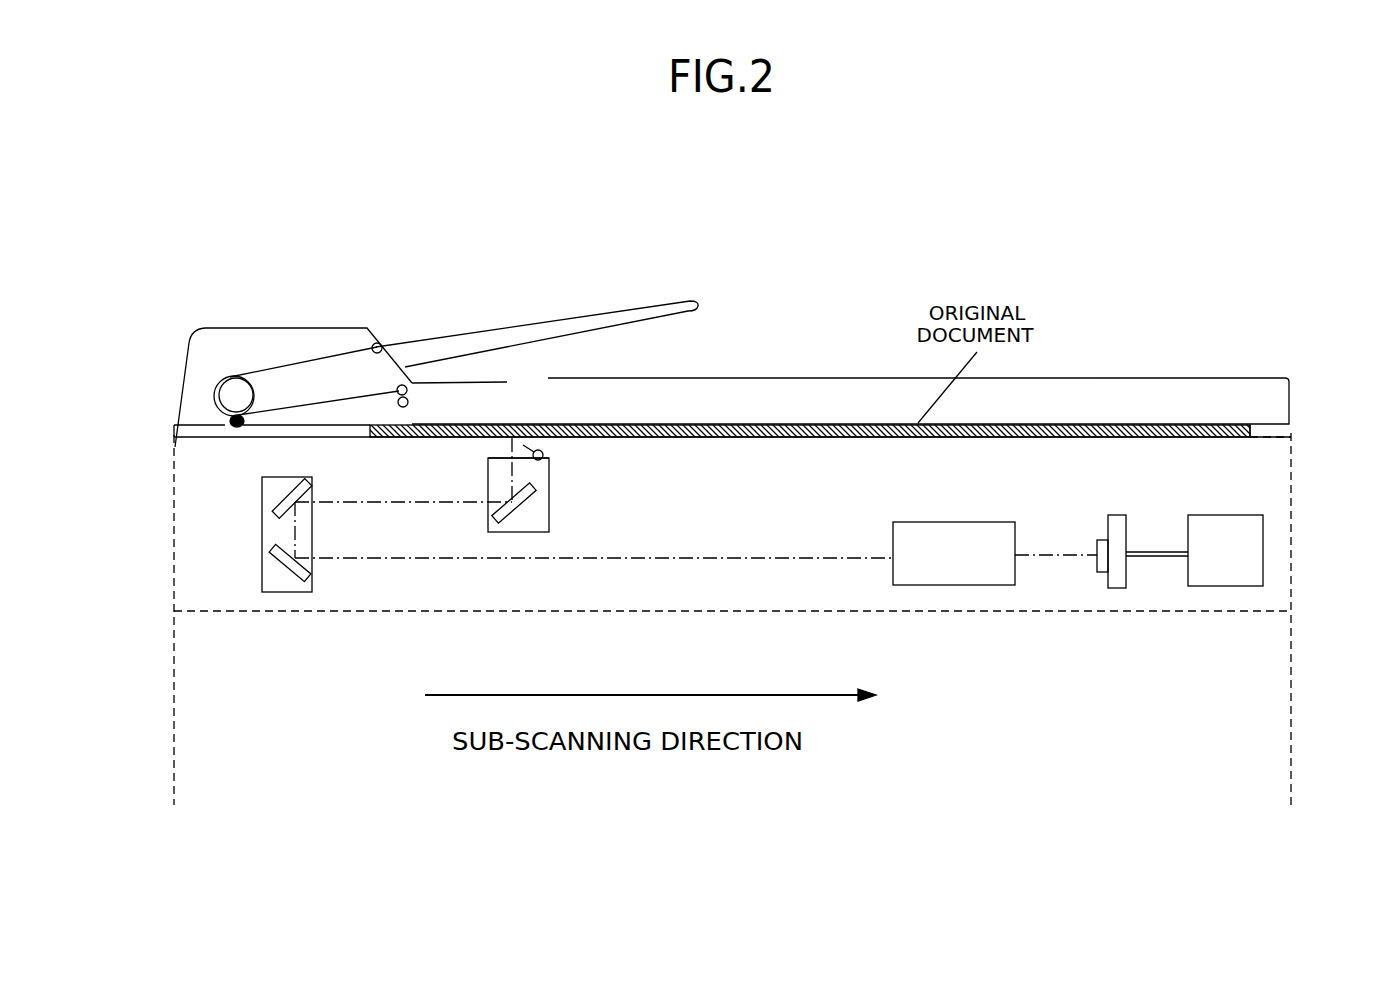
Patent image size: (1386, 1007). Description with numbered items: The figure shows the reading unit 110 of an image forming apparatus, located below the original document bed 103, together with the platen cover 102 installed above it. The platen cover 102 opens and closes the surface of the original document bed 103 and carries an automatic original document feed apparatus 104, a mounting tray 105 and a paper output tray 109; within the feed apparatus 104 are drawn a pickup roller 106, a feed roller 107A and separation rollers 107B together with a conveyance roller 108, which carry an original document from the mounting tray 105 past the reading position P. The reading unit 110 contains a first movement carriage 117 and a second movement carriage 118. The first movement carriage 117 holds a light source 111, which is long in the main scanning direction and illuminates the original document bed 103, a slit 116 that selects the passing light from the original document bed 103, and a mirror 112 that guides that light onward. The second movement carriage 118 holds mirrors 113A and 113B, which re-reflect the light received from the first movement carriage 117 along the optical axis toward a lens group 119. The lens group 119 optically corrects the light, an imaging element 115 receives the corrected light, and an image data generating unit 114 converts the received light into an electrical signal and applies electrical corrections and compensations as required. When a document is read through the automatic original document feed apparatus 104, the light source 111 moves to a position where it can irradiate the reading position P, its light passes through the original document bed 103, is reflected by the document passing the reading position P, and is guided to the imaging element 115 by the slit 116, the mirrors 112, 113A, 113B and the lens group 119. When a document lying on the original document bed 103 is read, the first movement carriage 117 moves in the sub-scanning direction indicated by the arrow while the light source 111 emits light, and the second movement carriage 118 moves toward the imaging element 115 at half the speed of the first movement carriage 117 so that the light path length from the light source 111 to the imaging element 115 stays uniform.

The platen cover 102 is at (1163, 400).
The original document bed 103 is at (1277, 429).
The automatic original document feed apparatus 104 is at (298, 333).
The mounting tray 105 is at (690, 300).
The pickup roller 106 is at (381, 343).
The feed roller 107A is at (225, 393).
The separation rollers 107B is at (406, 387).
The conveyance roller 108 is at (263, 370).
The paper output tray 109 is at (763, 380).
The reading unit 110 is at (1291, 547).
The light source 111 is at (545, 457).
The mirror 112 is at (513, 507).
The mirror 113A is at (272, 510).
The mirror 113B is at (293, 575).
The image data generating unit 114 is at (1210, 575).
The imaging element 115 is at (1113, 563).
The slit 116 is at (500, 462).
The first movement carriage 117 is at (550, 515).
The second movement carriage 118 is at (260, 580).
The lens group 119 is at (975, 585).
The reading position P is at (227, 420).